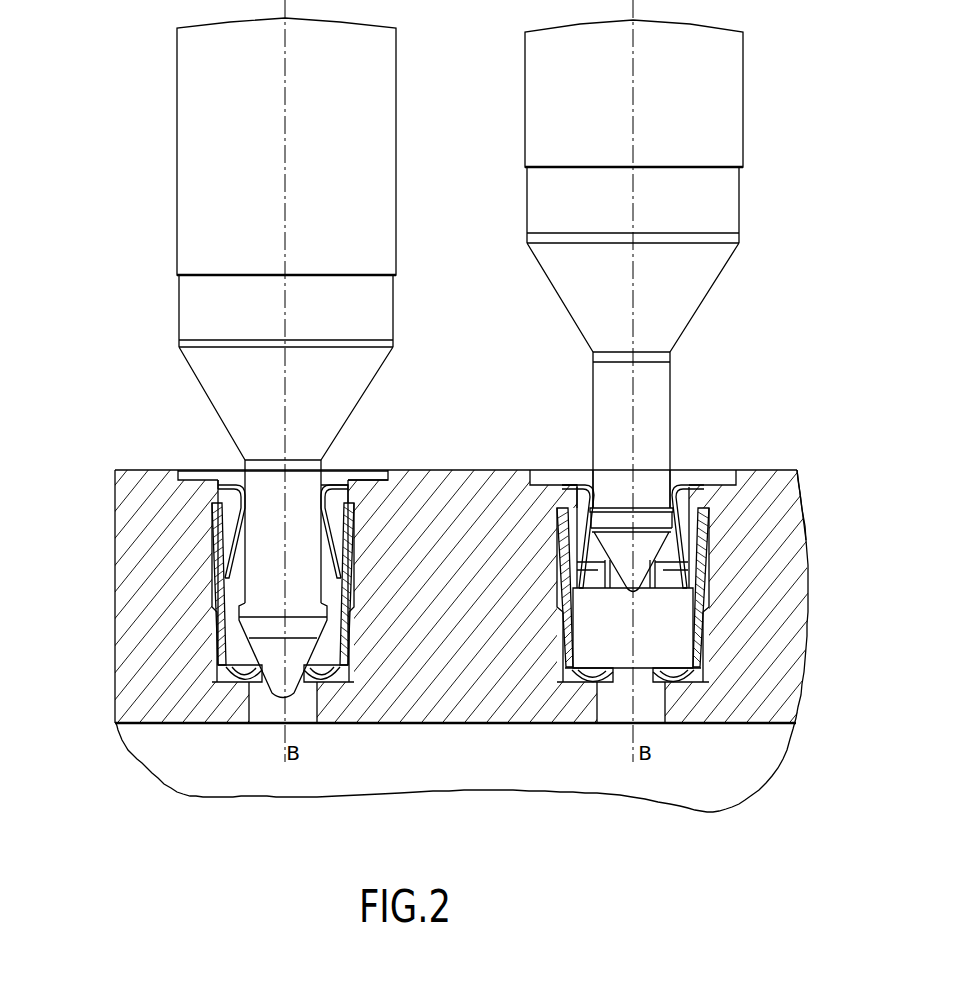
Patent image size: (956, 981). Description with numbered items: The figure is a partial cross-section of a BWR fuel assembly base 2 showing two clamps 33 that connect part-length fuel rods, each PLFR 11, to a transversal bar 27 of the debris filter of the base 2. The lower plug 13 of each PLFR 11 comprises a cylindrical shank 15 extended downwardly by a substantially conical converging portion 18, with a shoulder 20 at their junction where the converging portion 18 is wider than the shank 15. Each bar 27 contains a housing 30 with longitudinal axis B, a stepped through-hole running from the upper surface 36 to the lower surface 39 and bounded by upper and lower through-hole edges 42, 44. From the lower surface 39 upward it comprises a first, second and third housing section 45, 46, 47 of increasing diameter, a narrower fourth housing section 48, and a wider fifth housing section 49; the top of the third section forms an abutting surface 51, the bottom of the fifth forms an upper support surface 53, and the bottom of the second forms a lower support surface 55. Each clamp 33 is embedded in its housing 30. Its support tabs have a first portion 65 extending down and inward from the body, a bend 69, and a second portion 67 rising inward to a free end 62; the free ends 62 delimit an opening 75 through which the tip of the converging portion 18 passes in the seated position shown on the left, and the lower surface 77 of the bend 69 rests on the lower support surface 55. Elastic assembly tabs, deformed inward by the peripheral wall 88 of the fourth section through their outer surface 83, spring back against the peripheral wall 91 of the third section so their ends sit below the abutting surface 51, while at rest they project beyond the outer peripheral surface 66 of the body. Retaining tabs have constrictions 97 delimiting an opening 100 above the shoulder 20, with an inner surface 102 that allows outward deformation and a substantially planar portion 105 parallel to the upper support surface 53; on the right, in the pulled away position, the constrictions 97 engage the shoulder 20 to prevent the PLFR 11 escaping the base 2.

The base 2 is at (40, 568).
The PLFR 11 is at (178, 89).
The lower plug 13 is at (718, 412).
The shank 15 is at (594, 392).
The converging portion 18 is at (262, 700).
The shoulder 20 is at (322, 690).
The bar 27 is at (788, 512).
The housing 30 is at (181, 465).
The clamp 33 is at (212, 480).
The upper surface 36 is at (140, 469).
The lower surface 39 is at (150, 722).
The upper through-hole edge 42 is at (365, 470).
The lower through-hole edge 44 is at (310, 723).
The first housing section 45 is at (235, 708).
The second housing section 46 is at (215, 655).
The third housing section 47 is at (218, 612).
The fourth housing section 48 is at (210, 553).
The fifth housing section 49 is at (190, 474).
The abutting surface 51 is at (362, 512).
The upper support surface 53 is at (383, 477).
The lower support surface 55 is at (350, 683).
The free end 62 is at (660, 680).
The first portion 65 is at (693, 678).
The outer peripheral surface 66 is at (360, 640).
The second portion 67 is at (680, 680).
The bend 69 is at (690, 685).
The opening 75 is at (640, 680).
The lower surface 77 is at (582, 684).
The outer surface 83 is at (213, 590).
The peripheral wall 88 is at (337, 490).
The peripheral wall 91 is at (362, 572).
The constriction 97 is at (595, 492).
The opening 100 is at (322, 490).
The inner surface 102 is at (250, 478).
The substantially planar portion 105 is at (563, 483).